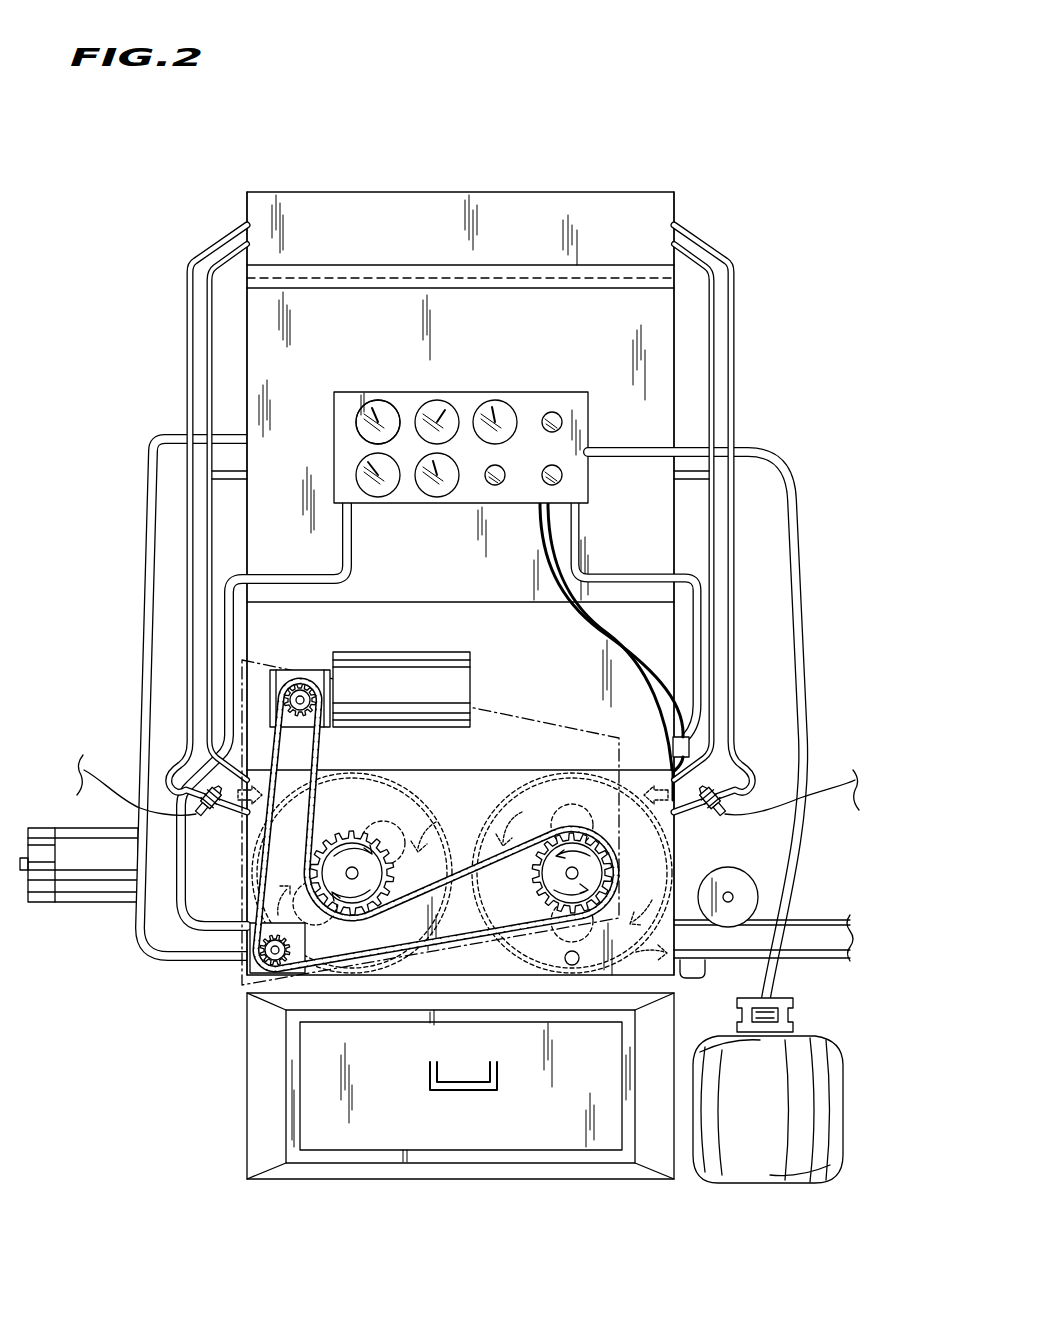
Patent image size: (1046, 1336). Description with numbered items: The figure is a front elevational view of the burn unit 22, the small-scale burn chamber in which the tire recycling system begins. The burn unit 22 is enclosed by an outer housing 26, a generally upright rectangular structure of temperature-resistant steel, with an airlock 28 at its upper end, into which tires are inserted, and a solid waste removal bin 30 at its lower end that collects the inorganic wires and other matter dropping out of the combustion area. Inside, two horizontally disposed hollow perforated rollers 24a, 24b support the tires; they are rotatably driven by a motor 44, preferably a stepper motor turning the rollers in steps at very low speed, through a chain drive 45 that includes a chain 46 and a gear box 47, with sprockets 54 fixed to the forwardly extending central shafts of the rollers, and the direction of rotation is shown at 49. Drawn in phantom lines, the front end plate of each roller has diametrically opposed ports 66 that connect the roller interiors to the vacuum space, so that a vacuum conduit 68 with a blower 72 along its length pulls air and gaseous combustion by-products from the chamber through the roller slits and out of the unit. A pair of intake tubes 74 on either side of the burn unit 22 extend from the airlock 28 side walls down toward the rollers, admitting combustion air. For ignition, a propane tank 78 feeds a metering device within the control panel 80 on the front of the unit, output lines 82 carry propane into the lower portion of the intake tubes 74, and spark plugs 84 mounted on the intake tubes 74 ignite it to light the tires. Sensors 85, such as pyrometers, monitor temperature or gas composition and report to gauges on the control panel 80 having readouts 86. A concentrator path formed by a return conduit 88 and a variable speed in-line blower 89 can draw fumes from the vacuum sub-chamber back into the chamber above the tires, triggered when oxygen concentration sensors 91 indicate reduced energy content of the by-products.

The burn unit 22 is at (613, 108).
The hollow perforated roller 24a is at (396, 782).
The hollow perforated roller 24b is at (610, 778).
The outer housing 26 is at (676, 386).
The airlock 28 is at (636, 191).
The solid waste removal bin 30 is at (470, 1133).
The motor 44 is at (472, 663).
The chain drive 45 is at (305, 652).
The chain 46 is at (272, 748).
The gear box 47 is at (303, 675).
The direction of rotation 49 is at (503, 830).
The sprocket 54 is at (324, 838).
The port 66 is at (556, 826).
The vacuum conduit 68 is at (808, 920).
The blower 72 is at (730, 866).
The intake tube 74 is at (726, 258).
The propane tank 78 is at (842, 1082).
The control panel 80 is at (458, 393).
The output line 82 is at (352, 545).
The spark plug 84 is at (732, 785).
The sensor 85 is at (690, 745).
The readout 86 is at (397, 395).
The return conduit 88 is at (140, 955).
The in-line blower 89 is at (76, 903).
The oxygen concentration sensor 91 is at (698, 978).